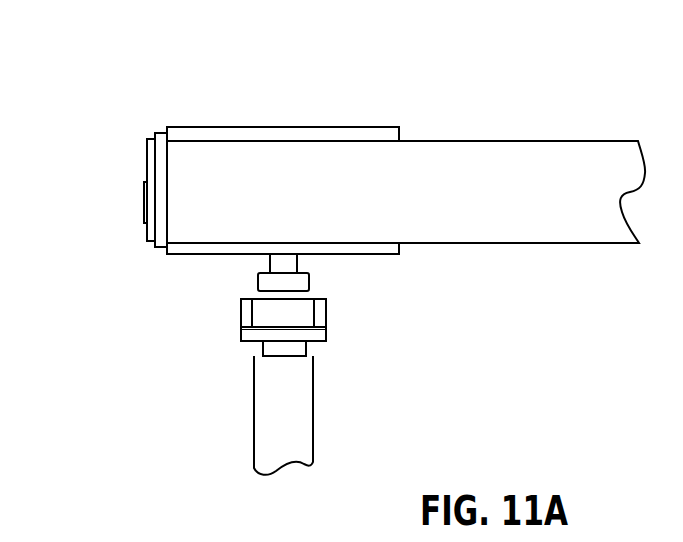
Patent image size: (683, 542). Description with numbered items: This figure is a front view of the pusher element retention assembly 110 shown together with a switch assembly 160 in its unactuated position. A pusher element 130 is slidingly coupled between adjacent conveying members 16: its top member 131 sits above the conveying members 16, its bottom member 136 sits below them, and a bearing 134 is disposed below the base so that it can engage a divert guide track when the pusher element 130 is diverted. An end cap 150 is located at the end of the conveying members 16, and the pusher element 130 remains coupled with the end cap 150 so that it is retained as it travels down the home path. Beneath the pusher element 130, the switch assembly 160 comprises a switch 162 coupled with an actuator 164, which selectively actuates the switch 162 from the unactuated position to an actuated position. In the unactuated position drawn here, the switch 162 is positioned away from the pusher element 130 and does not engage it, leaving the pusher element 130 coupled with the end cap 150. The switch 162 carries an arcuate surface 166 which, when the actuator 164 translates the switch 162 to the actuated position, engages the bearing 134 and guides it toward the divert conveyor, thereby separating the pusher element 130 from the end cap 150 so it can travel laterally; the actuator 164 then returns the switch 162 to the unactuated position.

The pusher element retention assembly 110 is at (143, 46).
The conveying members 16 is at (391, 208).
The pusher element 130 is at (203, 122).
The top member 131 is at (336, 127).
The bottom member 136 is at (399, 246).
The end cap 150 is at (147, 166).
The bearing 134 is at (260, 281).
The switch assembly 160 is at (195, 367).
The switch 162 is at (327, 318).
The arcuate surface 166 is at (282, 313).
The actuator 164 is at (307, 416).